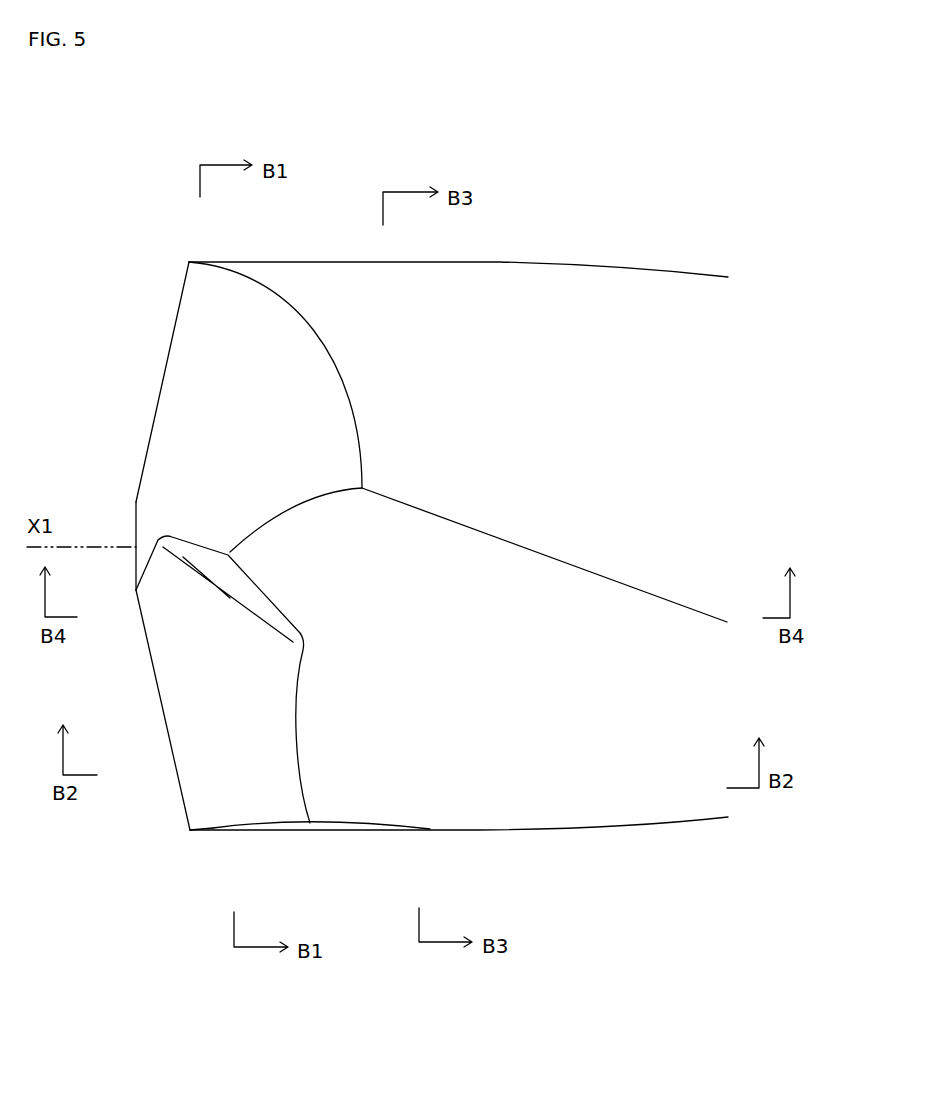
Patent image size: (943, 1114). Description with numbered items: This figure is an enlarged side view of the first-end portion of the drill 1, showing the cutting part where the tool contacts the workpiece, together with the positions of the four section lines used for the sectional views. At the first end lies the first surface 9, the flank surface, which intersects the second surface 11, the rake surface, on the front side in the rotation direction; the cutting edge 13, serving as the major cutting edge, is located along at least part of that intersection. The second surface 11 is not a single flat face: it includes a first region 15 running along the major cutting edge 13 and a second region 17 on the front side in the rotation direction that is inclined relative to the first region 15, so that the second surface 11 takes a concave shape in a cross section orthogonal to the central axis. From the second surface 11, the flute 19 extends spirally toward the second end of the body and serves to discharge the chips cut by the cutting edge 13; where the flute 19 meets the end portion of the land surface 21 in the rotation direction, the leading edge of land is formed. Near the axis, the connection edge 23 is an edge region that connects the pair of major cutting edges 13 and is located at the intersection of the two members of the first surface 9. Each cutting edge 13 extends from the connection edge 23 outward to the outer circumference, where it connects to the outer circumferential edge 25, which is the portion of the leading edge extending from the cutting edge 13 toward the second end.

The drill 1 is at (590, 190).
The first surface 9 is at (195, 422).
The second surface 11 is at (219, 692).
The cutting edge 13 is at (160, 380).
The first region 15 is at (201, 829).
The second region 17 is at (228, 594).
The flute 19 is at (457, 797).
The land surface 21 is at (340, 276).
The connection edge 23 is at (135, 518).
The outer circumferential edge 25 is at (233, 832).